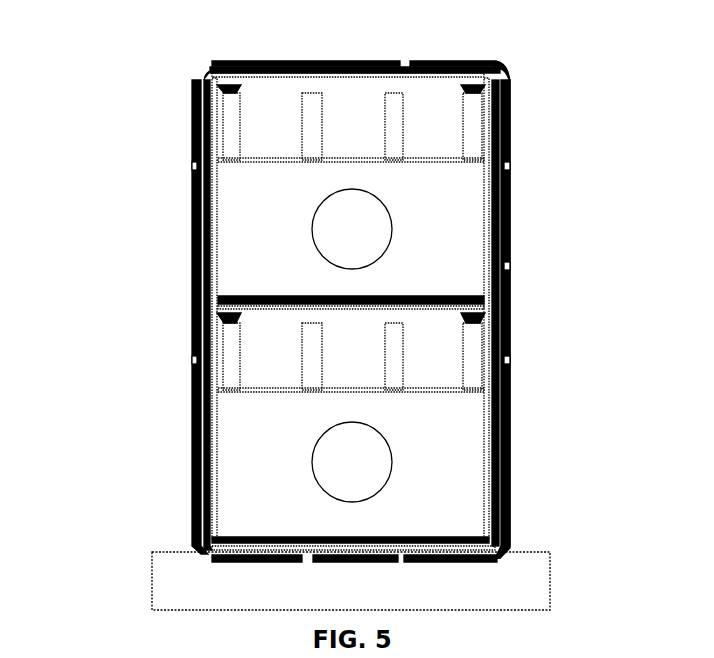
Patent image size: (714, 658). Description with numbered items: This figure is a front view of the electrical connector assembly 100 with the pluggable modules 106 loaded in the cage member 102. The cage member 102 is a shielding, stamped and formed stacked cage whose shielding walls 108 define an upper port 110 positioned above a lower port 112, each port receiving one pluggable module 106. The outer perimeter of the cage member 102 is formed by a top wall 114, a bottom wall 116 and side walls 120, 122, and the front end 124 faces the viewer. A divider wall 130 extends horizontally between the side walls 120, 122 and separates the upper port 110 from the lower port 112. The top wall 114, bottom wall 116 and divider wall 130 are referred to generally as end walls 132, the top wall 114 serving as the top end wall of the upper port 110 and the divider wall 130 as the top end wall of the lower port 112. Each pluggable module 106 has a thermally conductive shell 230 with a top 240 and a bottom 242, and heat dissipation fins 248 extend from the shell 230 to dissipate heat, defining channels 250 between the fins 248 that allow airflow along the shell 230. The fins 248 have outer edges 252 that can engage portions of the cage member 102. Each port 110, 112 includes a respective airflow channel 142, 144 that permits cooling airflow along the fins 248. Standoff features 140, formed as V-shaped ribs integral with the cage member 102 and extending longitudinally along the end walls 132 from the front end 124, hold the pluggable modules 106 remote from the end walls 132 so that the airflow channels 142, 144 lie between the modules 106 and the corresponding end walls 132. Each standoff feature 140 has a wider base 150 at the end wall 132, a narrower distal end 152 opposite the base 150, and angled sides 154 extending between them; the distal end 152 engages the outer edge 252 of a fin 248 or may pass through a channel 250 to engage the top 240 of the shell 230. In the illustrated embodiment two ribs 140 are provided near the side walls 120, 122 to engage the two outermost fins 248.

The electrical connector assembly 100 is at (128, 68).
The cage member 102 is at (200, 188).
The pluggable module 106 is at (238, 232).
The shielding wall 108 is at (202, 278).
The upper port 110 is at (214, 148).
The lower port 112 is at (214, 377).
The top wall 114 is at (300, 76).
The bottom wall 116 is at (314, 546).
The side wall 120 is at (210, 508).
The side wall 122 is at (496, 512).
The front end 124 is at (386, 546).
The divider wall 130 is at (218, 302).
The end wall 132 is at (404, 66).
The standoff feature 140 is at (224, 92).
The airflow channel 142 is at (490, 148).
The airflow channel 144 is at (490, 370).
The base 150 is at (496, 66).
The distal end 152 is at (498, 98).
The side 154 is at (498, 80).
The shell 230 is at (470, 210).
The top 240 is at (438, 160).
The bottom 242 is at (290, 543).
The heat dissipation fin 248 is at (237, 120).
The channel 250 is at (268, 368).
The outer edge 252 is at (222, 315).